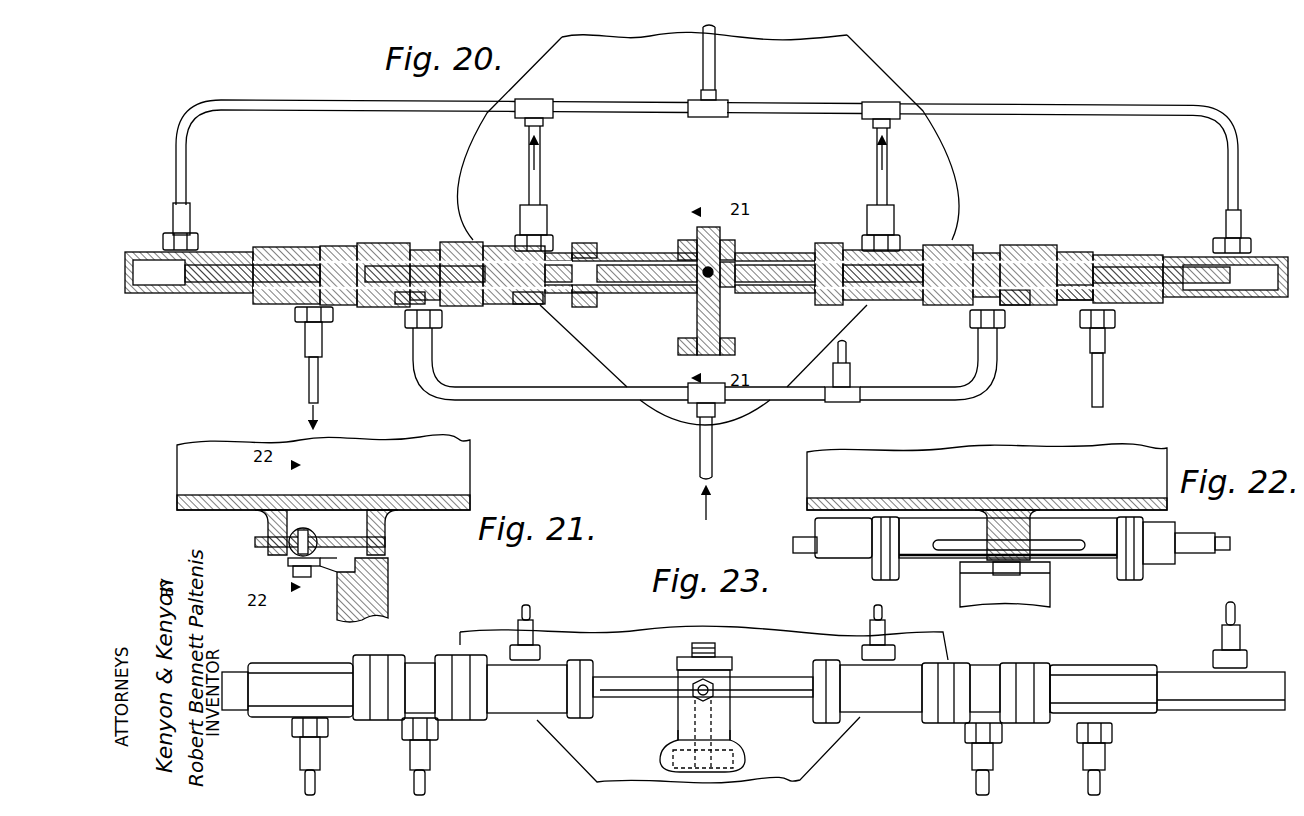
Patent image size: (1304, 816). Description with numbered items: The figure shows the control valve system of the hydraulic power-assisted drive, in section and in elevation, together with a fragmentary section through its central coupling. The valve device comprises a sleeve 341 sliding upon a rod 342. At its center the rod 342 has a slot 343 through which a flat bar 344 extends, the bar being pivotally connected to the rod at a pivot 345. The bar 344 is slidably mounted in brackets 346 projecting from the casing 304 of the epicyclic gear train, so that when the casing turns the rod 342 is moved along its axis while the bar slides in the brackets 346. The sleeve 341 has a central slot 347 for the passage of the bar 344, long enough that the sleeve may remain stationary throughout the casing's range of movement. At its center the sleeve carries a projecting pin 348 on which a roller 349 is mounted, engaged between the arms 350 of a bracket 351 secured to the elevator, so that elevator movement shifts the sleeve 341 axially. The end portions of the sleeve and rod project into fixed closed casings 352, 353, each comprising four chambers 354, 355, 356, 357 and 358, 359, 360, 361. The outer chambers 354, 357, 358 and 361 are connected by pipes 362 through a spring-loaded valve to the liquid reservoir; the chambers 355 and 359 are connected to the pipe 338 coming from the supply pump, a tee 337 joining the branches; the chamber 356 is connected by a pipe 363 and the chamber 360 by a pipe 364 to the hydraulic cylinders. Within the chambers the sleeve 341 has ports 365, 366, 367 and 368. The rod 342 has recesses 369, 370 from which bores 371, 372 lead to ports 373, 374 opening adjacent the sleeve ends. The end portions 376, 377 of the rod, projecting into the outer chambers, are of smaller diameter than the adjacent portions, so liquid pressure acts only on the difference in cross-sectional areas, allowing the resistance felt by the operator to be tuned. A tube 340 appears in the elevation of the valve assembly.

In FIG. 20, the casing 304 is at (880, 80).
In FIG. 21, the casing 304 is at (323, 472).
In FIG. 22, the casing 304 is at (960, 500).
In FIG. 23, the casing 304 is at (704, 704).
In FIG. 20, the tee fitting 337 is at (851, 373).
In FIG. 20, the pipe 338 is at (545, 390).
In FIG. 23, the pipe 338 is at (426, 758).
In FIG. 23, the tube 340 is at (1068, 666).
In FIG. 20, the sleeve 341 is at (800, 254).
In FIG. 22, the sleeve 341 is at (1180, 543).
In FIG. 20, the rod 342 is at (655, 268).
In FIG. 22, the rod 342 is at (1217, 545).
In FIG. 20, the slot 343 is at (720, 275).
In FIG. 20, the flat bar 344 is at (716, 355).
In FIG. 21, the flat bar 344 is at (387, 544).
In FIG. 22, the flat bar 344 is at (985, 558).
In FIG. 23, the flat bar 344 is at (735, 742).
In FIG. 20, the pivot 345 is at (725, 268).
In FIG. 21, the pivot 345 is at (306, 528).
In FIG. 20, the brackets 346 is at (686, 240).
In FIG. 21, the brackets 346 is at (268, 522).
In FIG. 22, the brackets 346 is at (1014, 530).
In FIG. 23, the brackets 346 is at (726, 665).
In FIG. 20, the slot 347 is at (645, 262).
In FIG. 22, the slot 347 is at (1058, 545).
In FIG. 23, the slot 347 is at (645, 678).
In FIG. 21, the projecting pin 348 is at (306, 578).
In FIG. 23, the projecting pin 348 is at (695, 693).
In FIG. 21, the roller 349 is at (288, 563).
In FIG. 22, the roller 349 is at (1020, 580).
In FIG. 23, the roller 349 is at (715, 690).
In FIG. 21, the arms 350 is at (330, 586).
In FIG. 22, the arms 350 is at (1045, 562).
In FIG. 23, the arms 350 is at (730, 700).
In FIG. 21, the bracket 351 is at (388, 588).
In FIG. 22, the bracket 351 is at (1005, 584).
In FIG. 23, the bracket 351 is at (745, 762).
In FIG. 20, the closed casing 352 is at (1040, 255).
In FIG. 23, the closed casing 352 is at (1120, 714).
In FIG. 20, the closed casing 353 is at (368, 250).
In FIG. 23, the closed casing 353 is at (430, 665).
In FIG. 20, the chamber 354 is at (905, 255).
In FIG. 20, the chamber 355 is at (1005, 258).
In FIG. 20, the chamber 356 is at (1075, 266).
In FIG. 20, the chamber 357 is at (1255, 272).
In FIG. 20, the chamber 358 is at (555, 258).
In FIG. 20, the chamber 359 is at (420, 258).
In FIG. 20, the chamber 360 is at (270, 255).
In FIG. 20, the chamber 361 is at (150, 262).
In FIG. 20, the pipes 362 is at (322, 100).
In FIG. 23, the pipes 362 is at (530, 625).
In FIG. 20, the pipe 363 is at (1100, 385).
In FIG. 23, the pipe 363 is at (1101, 760).
In FIG. 20, the pipe 364 is at (322, 390).
In FIG. 23, the pipe 364 is at (306, 752).
In FIG. 20, the port 365 is at (880, 300).
In FIG. 20, the port 366 is at (1010, 306).
In FIG. 20, the port 367 is at (540, 302).
In FIG. 20, the port 368 is at (395, 306).
In FIG. 20, the recess 369 is at (960, 262).
In FIG. 20, the recess 370 is at (498, 262).
In FIG. 20, the bore 371 is at (1065, 300).
In FIG. 20, the bore 372 is at (385, 250).
In FIG. 20, the port 373 is at (1095, 262).
In FIG. 20, the port 374 is at (322, 262).
In FIG. 20, the end portion 376 is at (1205, 290).
In FIG. 20, the end portion 377 is at (210, 285).